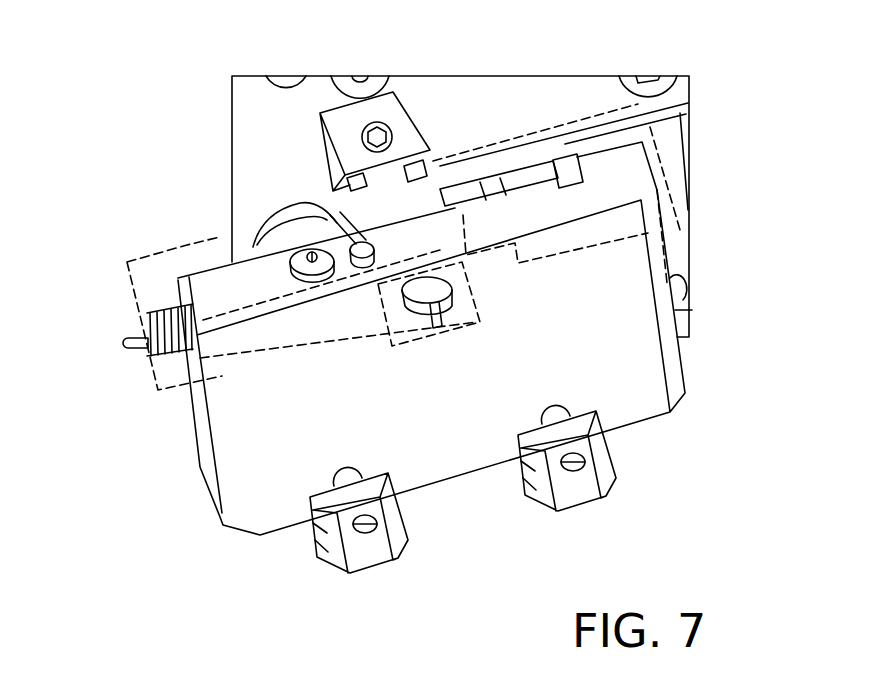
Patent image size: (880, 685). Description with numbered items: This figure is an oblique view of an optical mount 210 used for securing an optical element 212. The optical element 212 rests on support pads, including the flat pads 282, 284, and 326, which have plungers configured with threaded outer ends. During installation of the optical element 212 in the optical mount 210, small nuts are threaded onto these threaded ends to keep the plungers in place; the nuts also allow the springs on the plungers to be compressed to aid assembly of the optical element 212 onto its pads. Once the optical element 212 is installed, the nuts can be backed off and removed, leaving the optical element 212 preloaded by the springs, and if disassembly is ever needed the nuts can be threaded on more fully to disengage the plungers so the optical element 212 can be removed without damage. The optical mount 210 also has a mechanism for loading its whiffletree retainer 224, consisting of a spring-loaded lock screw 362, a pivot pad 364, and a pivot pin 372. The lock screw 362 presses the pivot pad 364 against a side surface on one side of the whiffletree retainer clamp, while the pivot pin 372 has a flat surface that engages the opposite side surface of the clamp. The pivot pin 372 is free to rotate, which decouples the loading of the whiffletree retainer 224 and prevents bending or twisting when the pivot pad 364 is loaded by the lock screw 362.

The optical mount 210 is at (422, 327).
The optical element 212 is at (630, 273).
The whiffletree retainer 224 is at (688, 160).
The flat pad 282 is at (308, 565).
The flat pad 284 is at (565, 526).
The flat pad 326 is at (190, 300).
The spring-loaded lock screw 362 is at (544, 165).
The pivot pad 364 is at (463, 203).
The pivot pin 372 is at (345, 225).